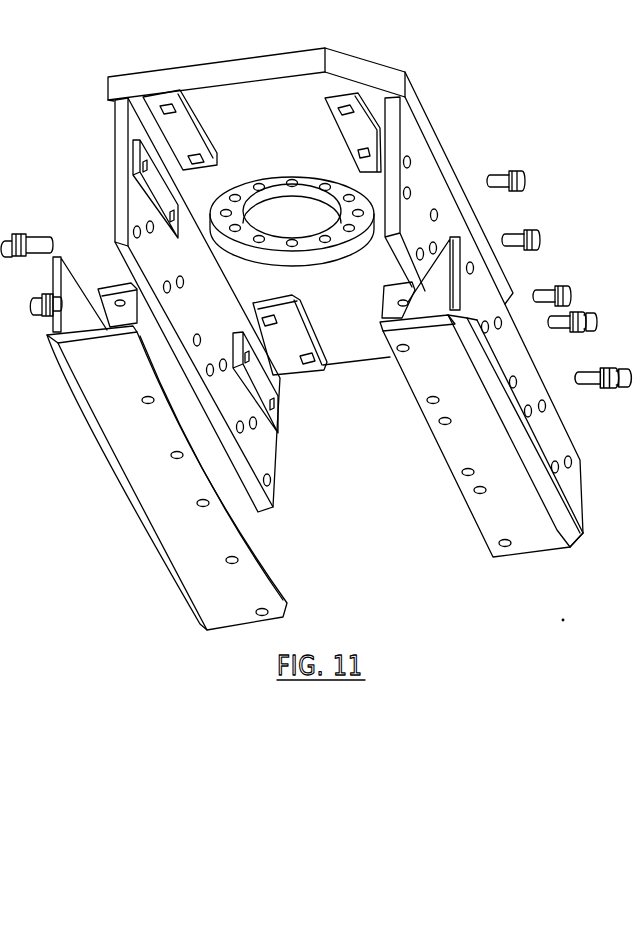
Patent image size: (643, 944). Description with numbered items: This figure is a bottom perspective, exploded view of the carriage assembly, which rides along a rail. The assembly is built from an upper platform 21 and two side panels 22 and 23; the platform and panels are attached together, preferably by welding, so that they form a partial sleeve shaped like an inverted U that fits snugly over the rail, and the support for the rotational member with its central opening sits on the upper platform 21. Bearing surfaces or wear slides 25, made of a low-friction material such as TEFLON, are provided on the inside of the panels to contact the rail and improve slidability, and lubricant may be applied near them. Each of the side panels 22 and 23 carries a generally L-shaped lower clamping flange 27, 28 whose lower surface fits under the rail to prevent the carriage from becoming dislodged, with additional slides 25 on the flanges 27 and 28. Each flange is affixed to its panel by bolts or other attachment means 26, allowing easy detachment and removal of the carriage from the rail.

The upper platform 21 is at (257, 63).
The side panel 22 is at (418, 175).
The side panel 23 is at (125, 160).
The wear slides 25 is at (183, 127).
The attachment means 26 is at (560, 280).
The lower clamping flange 27 is at (527, 495).
The lower clamping flange 28 is at (163, 512).